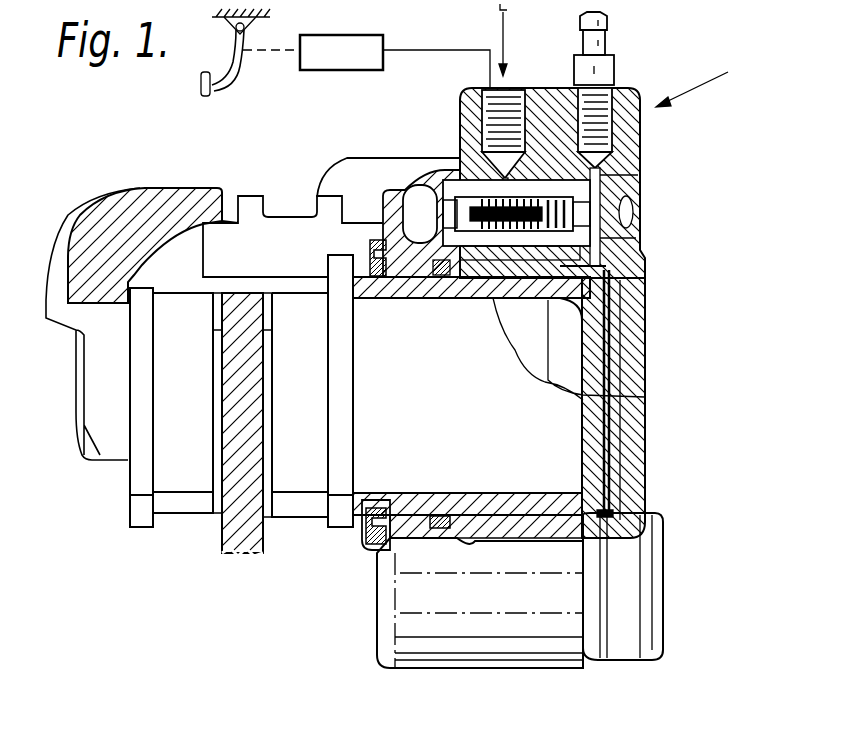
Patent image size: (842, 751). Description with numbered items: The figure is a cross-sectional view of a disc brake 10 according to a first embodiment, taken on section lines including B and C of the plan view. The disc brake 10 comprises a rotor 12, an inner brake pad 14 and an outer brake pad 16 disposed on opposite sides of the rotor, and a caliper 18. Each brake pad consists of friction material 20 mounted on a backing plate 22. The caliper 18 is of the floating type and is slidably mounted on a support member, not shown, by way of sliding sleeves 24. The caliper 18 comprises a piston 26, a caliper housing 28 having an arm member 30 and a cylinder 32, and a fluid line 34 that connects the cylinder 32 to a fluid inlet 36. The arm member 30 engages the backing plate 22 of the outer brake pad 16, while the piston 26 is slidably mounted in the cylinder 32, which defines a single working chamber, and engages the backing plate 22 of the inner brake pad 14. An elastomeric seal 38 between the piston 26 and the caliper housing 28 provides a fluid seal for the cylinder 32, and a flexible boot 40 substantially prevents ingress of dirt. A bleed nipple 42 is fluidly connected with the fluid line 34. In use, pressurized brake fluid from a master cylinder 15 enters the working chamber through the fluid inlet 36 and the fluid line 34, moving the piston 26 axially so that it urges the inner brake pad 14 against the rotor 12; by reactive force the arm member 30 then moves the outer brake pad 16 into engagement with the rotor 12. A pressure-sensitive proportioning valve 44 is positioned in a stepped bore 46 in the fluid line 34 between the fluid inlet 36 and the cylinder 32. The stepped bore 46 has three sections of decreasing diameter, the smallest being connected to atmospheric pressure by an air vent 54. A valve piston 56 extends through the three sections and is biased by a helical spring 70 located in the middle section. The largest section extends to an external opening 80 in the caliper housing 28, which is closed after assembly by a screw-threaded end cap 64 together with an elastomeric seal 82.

The disc brake 10 is at (117, 166).
The rotor 12 is at (248, 530).
The inner brake pad 14 is at (307, 514).
The master cylinder 15 is at (347, 72).
The outer brake pad 16 is at (160, 518).
The caliper 18 is at (650, 363).
The friction material 20 is at (313, 415).
The backing plate 22 is at (343, 428).
The sliding sleeves 24 is at (540, 643).
The piston 26 is at (590, 482).
The caliper housing 28 is at (632, 496).
The arm member 30 is at (78, 338).
The cylinder 32 is at (616, 437).
The fluid line 34 is at (606, 266).
The fluid inlet 36 is at (514, 82).
The elastomeric seal 38 is at (448, 512).
The flexible boot 40 is at (370, 552).
The bleed nipple 42 is at (612, 46).
The proportioning valve 44 is at (464, 183).
The stepped bore 46 is at (497, 248).
The air vent 54 is at (443, 200).
The valve piston 56 is at (512, 248).
The end cap 64 is at (628, 233).
The helical spring 70 is at (474, 270).
The external opening 80 is at (630, 215).
The elastomeric seal 82 is at (622, 170).
The section line B— B is at (701, 81).
The section line C— C is at (503, 38).